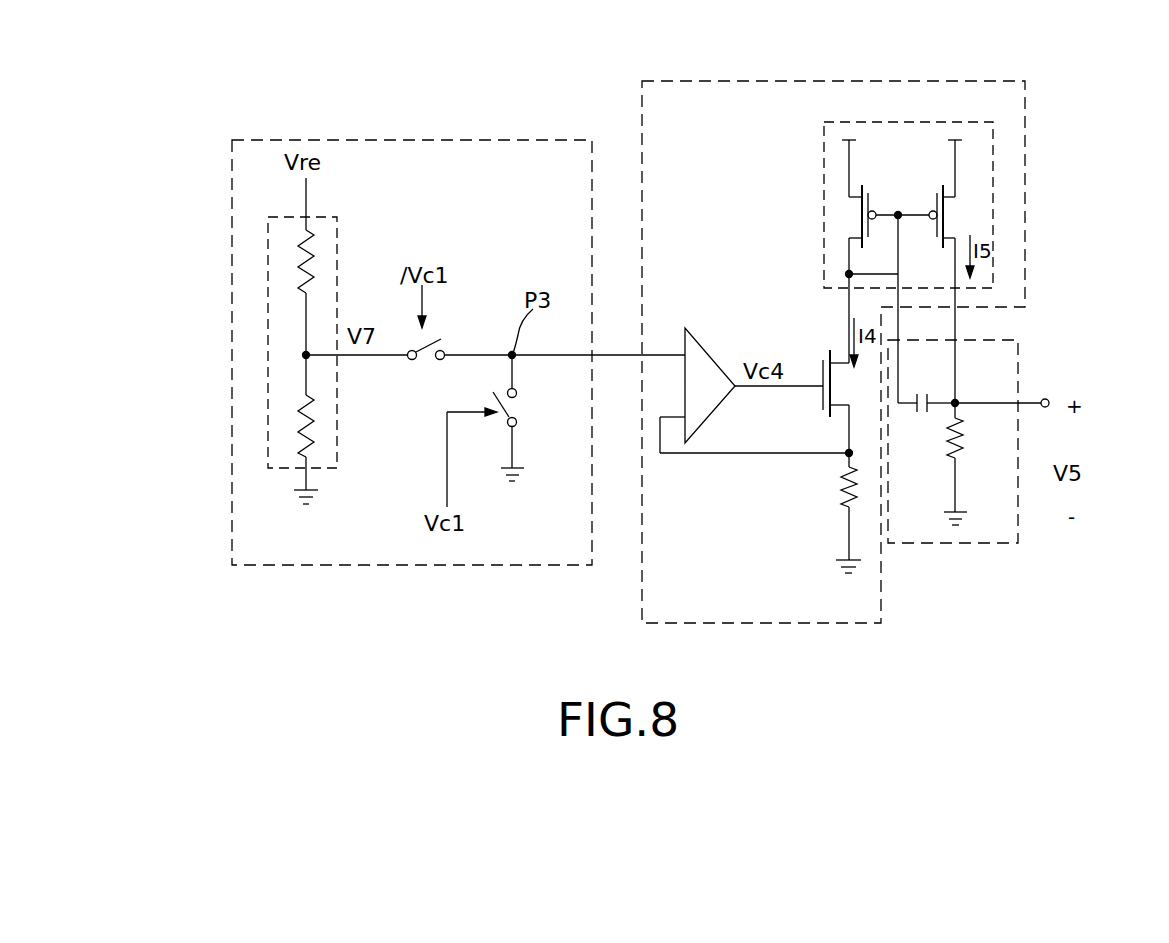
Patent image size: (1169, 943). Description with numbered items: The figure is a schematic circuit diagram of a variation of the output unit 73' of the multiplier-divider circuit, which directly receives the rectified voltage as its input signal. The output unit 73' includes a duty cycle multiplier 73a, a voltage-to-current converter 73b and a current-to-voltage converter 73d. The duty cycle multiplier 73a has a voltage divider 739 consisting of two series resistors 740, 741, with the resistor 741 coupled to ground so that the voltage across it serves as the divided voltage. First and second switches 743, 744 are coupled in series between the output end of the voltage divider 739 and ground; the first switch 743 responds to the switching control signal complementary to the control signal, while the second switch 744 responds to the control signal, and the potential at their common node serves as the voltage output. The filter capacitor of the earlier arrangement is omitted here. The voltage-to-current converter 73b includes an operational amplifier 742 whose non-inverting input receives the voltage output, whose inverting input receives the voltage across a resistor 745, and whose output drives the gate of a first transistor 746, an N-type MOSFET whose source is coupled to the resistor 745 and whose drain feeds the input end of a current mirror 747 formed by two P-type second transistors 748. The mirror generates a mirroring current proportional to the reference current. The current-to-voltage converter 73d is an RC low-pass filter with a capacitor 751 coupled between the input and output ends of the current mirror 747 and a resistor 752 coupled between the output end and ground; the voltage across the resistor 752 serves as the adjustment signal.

The output unit 73' is at (1128, 182).
The duty cycle multiplier 73a is at (462, 140).
The voltage-to-current converter 73b is at (797, 81).
The current-to-voltage converter 73d is at (1018, 517).
The voltage divider 739 is at (321, 217).
The resistor 740 is at (297, 260).
The resistor 741 is at (317, 433).
The operational amplifier 742 is at (713, 355).
The first switch 743 is at (445, 342).
The second switch 744 is at (503, 417).
The resistor 745 is at (843, 488).
The first transistor 746 is at (822, 363).
The current mirror 747 is at (823, 160).
The second transistor 748 is at (873, 203).
The capacitor 751 is at (922, 415).
The resistor 752 is at (960, 430).